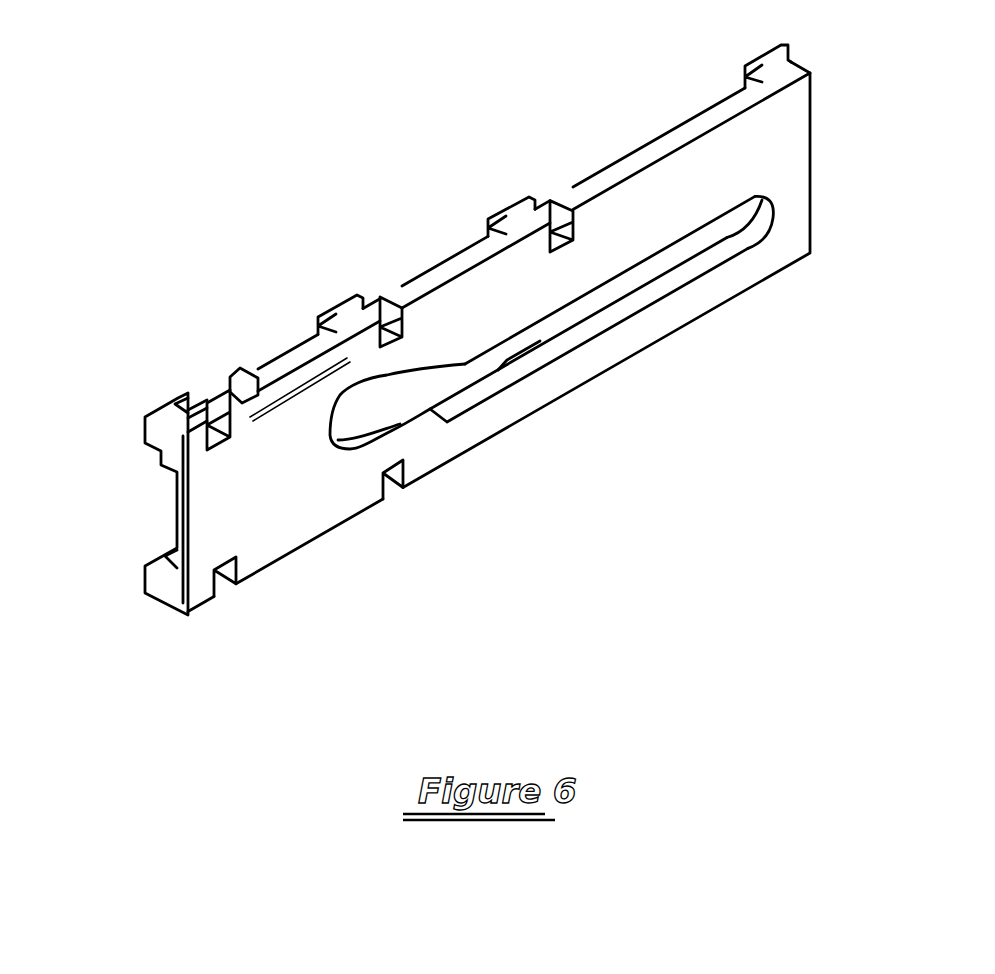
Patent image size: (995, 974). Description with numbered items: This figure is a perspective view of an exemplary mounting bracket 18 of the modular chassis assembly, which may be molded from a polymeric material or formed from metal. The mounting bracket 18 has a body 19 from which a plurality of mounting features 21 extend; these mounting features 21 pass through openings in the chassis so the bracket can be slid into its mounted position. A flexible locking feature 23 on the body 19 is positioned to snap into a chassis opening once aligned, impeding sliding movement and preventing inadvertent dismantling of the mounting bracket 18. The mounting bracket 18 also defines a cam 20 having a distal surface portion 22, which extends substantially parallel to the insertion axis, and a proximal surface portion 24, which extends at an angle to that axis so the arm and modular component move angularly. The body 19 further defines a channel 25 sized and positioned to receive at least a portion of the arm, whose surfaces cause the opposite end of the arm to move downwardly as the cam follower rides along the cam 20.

The mounting bracket 18 is at (435, 137).
The body 19 is at (286, 505).
The cam 20 is at (597, 300).
The mounting features 21 is at (512, 207).
The distal surface portion 22 is at (703, 263).
The flexible locking feature 23 is at (252, 378).
The proximal surface portion 24 is at (403, 428).
The channel 25 is at (177, 512).